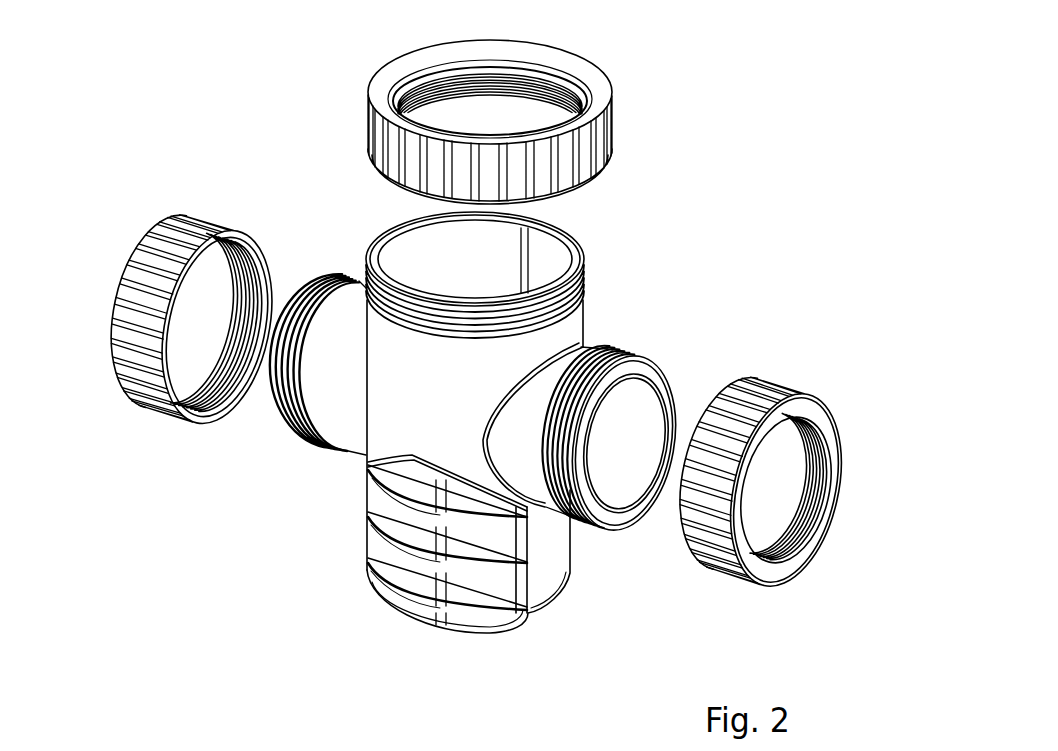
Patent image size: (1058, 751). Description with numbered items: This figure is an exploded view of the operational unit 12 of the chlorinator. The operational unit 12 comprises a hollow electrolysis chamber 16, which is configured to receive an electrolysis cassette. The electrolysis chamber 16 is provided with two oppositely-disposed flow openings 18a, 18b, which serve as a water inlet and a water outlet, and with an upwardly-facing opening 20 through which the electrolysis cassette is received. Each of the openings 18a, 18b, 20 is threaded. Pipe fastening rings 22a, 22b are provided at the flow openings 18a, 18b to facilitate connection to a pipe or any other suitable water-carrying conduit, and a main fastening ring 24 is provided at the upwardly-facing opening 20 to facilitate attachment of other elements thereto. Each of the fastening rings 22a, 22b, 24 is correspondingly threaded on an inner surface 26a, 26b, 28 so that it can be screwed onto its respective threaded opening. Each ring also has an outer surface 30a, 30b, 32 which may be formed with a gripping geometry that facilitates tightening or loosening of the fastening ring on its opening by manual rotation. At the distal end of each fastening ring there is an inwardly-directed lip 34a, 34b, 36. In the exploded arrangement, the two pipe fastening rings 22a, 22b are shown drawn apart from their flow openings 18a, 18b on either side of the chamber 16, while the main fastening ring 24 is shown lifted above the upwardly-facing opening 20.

The operational unit 12 is at (758, 271).
The hollow electrolysis chamber 16 is at (560, 565).
The flow opening 18a is at (652, 405).
The flow opening 18b is at (303, 282).
The upwardly-facing opening 20 is at (548, 260).
The pipe fastening ring 22a is at (831, 432).
The pipe fastening ring 22b is at (112, 372).
The main fastening ring 24 is at (386, 79).
The inner surface 26a is at (805, 527).
The inner surface 26b is at (225, 355).
The inner surface 28 is at (507, 78).
The outer surface 30a is at (776, 392).
The outer surface 30b is at (212, 217).
The outer surface 32 is at (604, 144).
The inwardly-directed lip 34a is at (797, 547).
The inwardly-directed lip 34b is at (203, 322).
The inwardly-directed lip 36 is at (565, 74).